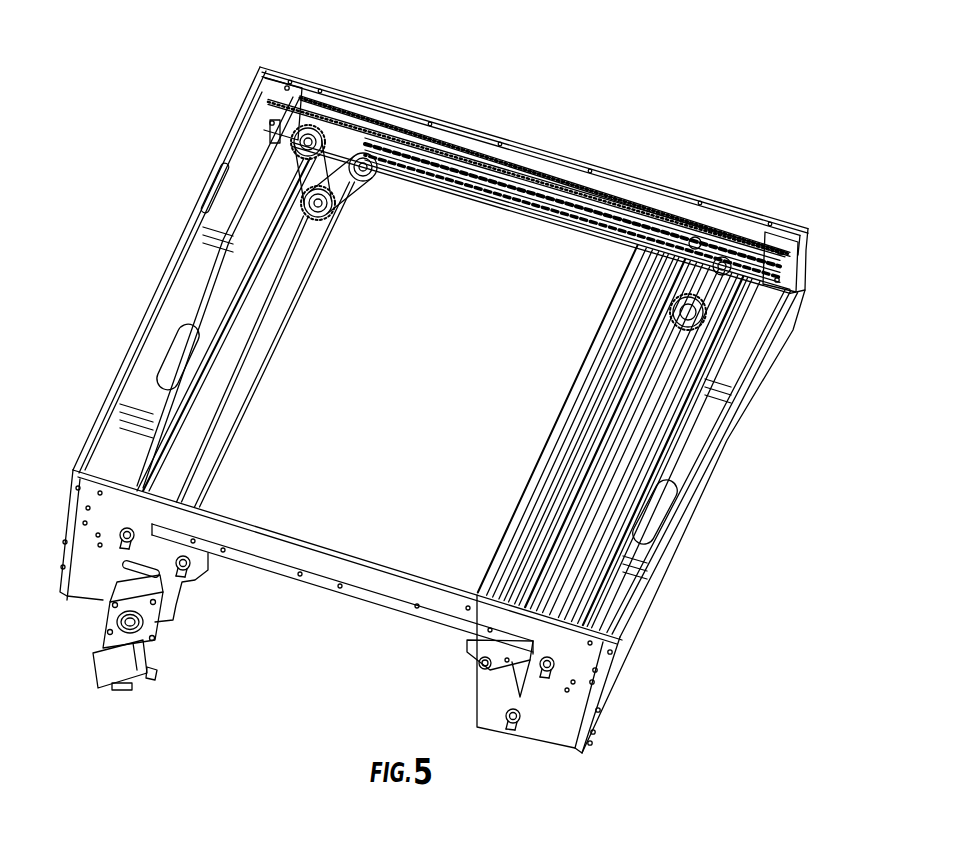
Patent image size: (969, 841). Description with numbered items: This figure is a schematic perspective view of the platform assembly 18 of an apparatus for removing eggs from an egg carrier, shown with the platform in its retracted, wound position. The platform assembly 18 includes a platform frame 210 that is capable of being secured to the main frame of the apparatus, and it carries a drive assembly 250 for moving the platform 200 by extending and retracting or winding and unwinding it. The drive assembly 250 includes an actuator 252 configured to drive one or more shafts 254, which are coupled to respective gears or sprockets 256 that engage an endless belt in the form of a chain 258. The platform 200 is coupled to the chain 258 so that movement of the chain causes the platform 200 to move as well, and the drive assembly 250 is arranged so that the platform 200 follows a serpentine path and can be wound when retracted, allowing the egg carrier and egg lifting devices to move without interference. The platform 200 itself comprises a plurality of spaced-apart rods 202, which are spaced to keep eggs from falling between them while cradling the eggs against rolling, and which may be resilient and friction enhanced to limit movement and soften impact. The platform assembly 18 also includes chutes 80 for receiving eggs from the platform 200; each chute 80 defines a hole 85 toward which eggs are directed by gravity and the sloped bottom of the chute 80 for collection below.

The platform assembly 18 is at (677, 127).
The chute 80 is at (241, 198).
The hole 85 is at (177, 352).
The platform 200 is at (546, 384).
The rods 202 is at (527, 503).
The platform frame 210 is at (545, 732).
The drive assembly 250 is at (330, 313).
The actuator 252 is at (113, 676).
The shafts 254 is at (275, 376).
The sprockets 256 is at (381, 178).
The chain 258 is at (526, 208).